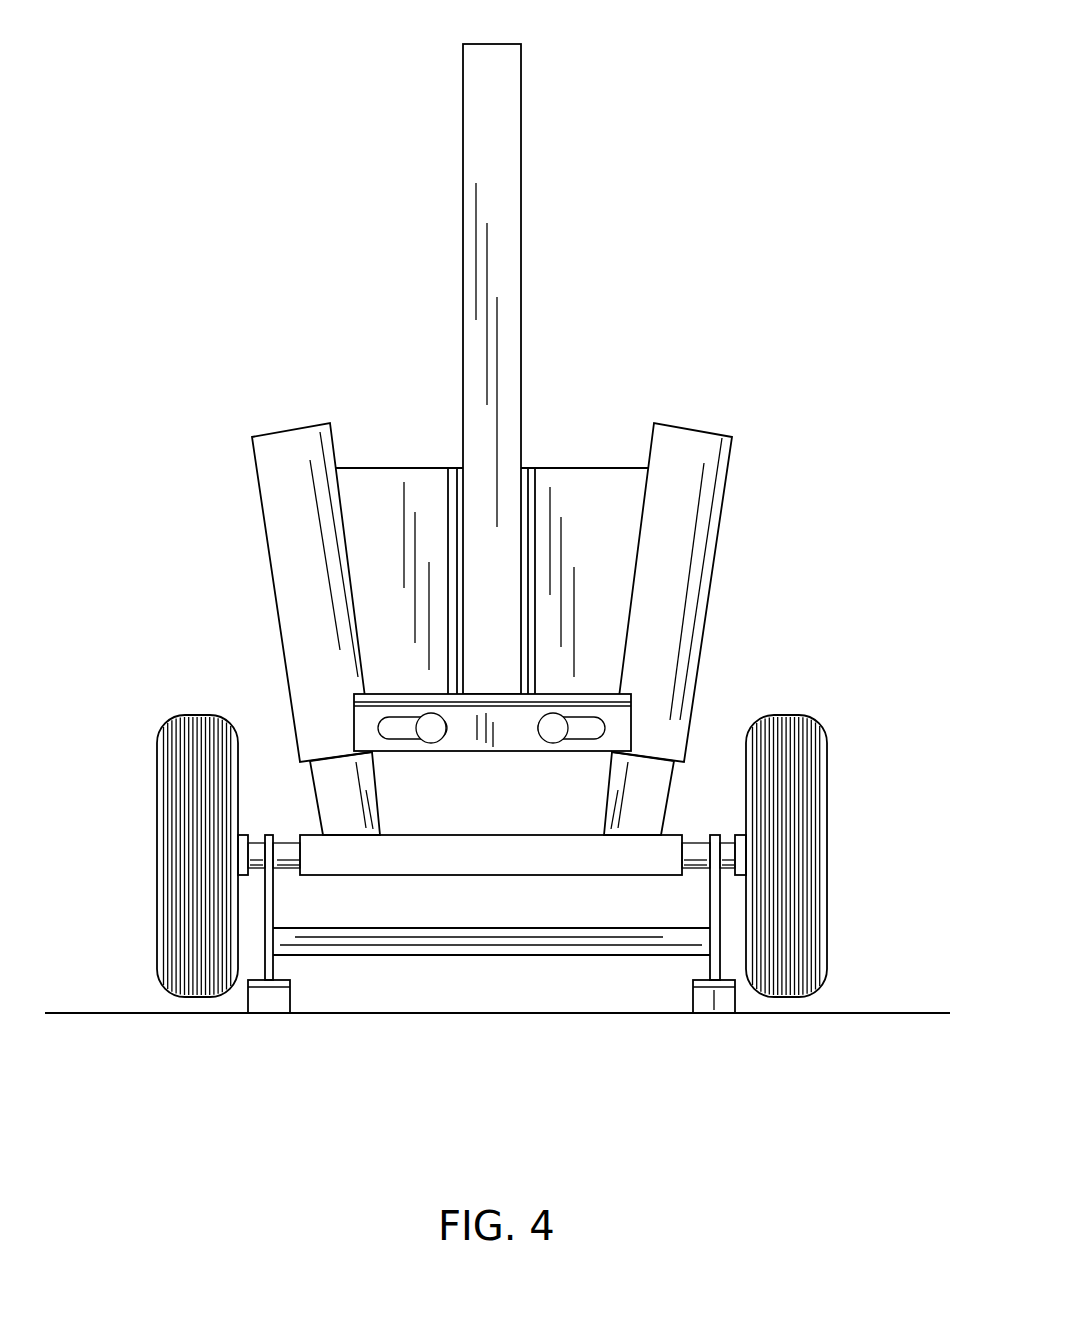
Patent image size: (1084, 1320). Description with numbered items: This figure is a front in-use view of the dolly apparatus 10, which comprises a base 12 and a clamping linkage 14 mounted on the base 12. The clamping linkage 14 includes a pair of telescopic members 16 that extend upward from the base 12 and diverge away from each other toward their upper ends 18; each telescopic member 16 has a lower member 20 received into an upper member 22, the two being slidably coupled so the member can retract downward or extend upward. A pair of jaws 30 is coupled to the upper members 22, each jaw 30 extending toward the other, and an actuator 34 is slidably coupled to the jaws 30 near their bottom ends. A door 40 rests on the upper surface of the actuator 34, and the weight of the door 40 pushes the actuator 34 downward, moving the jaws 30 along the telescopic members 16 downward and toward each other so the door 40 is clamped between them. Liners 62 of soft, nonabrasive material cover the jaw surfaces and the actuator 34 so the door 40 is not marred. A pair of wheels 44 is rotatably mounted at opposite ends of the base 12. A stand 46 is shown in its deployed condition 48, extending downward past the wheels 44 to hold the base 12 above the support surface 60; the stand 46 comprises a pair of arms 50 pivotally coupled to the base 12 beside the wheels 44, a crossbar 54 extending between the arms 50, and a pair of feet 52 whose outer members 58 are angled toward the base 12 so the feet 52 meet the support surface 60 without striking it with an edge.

The dolly apparatus 10 is at (675, 88).
The base 12 is at (538, 866).
The clamping linkage 14 is at (645, 368).
The telescopic members 16 is at (233, 547).
The upper ends 18 is at (500, 563).
The lower member 20 is at (330, 793).
The upper member 22 is at (300, 597).
The jaws 30 is at (390, 505).
The actuator 34 is at (474, 737).
The door 40 is at (498, 182).
The wheels 44 is at (178, 789).
The stand 46 is at (450, 980).
The deployed condition 48 is at (520, 990).
The arms 50 is at (277, 963).
The feet 52 is at (484, 986).
The crossbar 54 is at (397, 938).
The outer members 58 is at (265, 997).
The support surface 60 is at (865, 1013).
The liners 62 is at (463, 523).